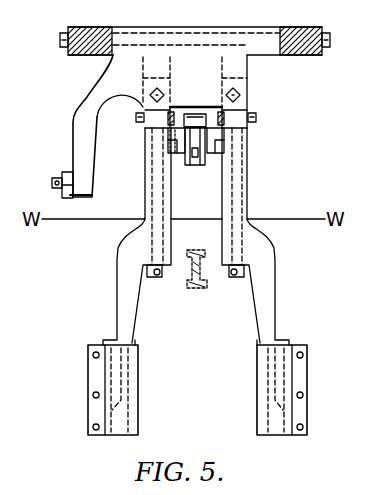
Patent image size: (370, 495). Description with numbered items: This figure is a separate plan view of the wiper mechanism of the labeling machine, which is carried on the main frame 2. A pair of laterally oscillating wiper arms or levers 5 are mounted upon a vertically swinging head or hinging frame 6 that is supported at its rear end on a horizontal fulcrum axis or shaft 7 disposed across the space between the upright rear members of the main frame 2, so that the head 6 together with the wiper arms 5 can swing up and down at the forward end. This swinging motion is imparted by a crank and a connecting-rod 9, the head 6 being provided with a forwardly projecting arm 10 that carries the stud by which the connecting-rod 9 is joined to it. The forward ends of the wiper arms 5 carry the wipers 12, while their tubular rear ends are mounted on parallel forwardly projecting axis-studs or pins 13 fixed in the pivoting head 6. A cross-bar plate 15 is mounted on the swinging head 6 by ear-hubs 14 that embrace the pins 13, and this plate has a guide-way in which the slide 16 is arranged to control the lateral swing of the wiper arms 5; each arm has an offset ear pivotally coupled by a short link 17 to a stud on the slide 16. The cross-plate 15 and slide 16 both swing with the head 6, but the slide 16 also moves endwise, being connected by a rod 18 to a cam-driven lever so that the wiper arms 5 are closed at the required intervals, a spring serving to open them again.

The main frame 2 is at (75, 55).
The wiper arms 5 is at (125, 285).
The swinging head 6 is at (195, 77).
The fulcrum shaft 7 is at (331, 42).
The connecting-rod 9 is at (62, 178).
The forwardly projecting arm 10 is at (83, 133).
The wipers 12 is at (123, 385).
The axis-studs 13 is at (155, 277).
The ear-hubs 14 is at (212, 150).
The cross-bar plate 15 is at (212, 115).
The slide 16 is at (173, 138).
The short link 17 is at (222, 139).
The rod 18 is at (200, 165).